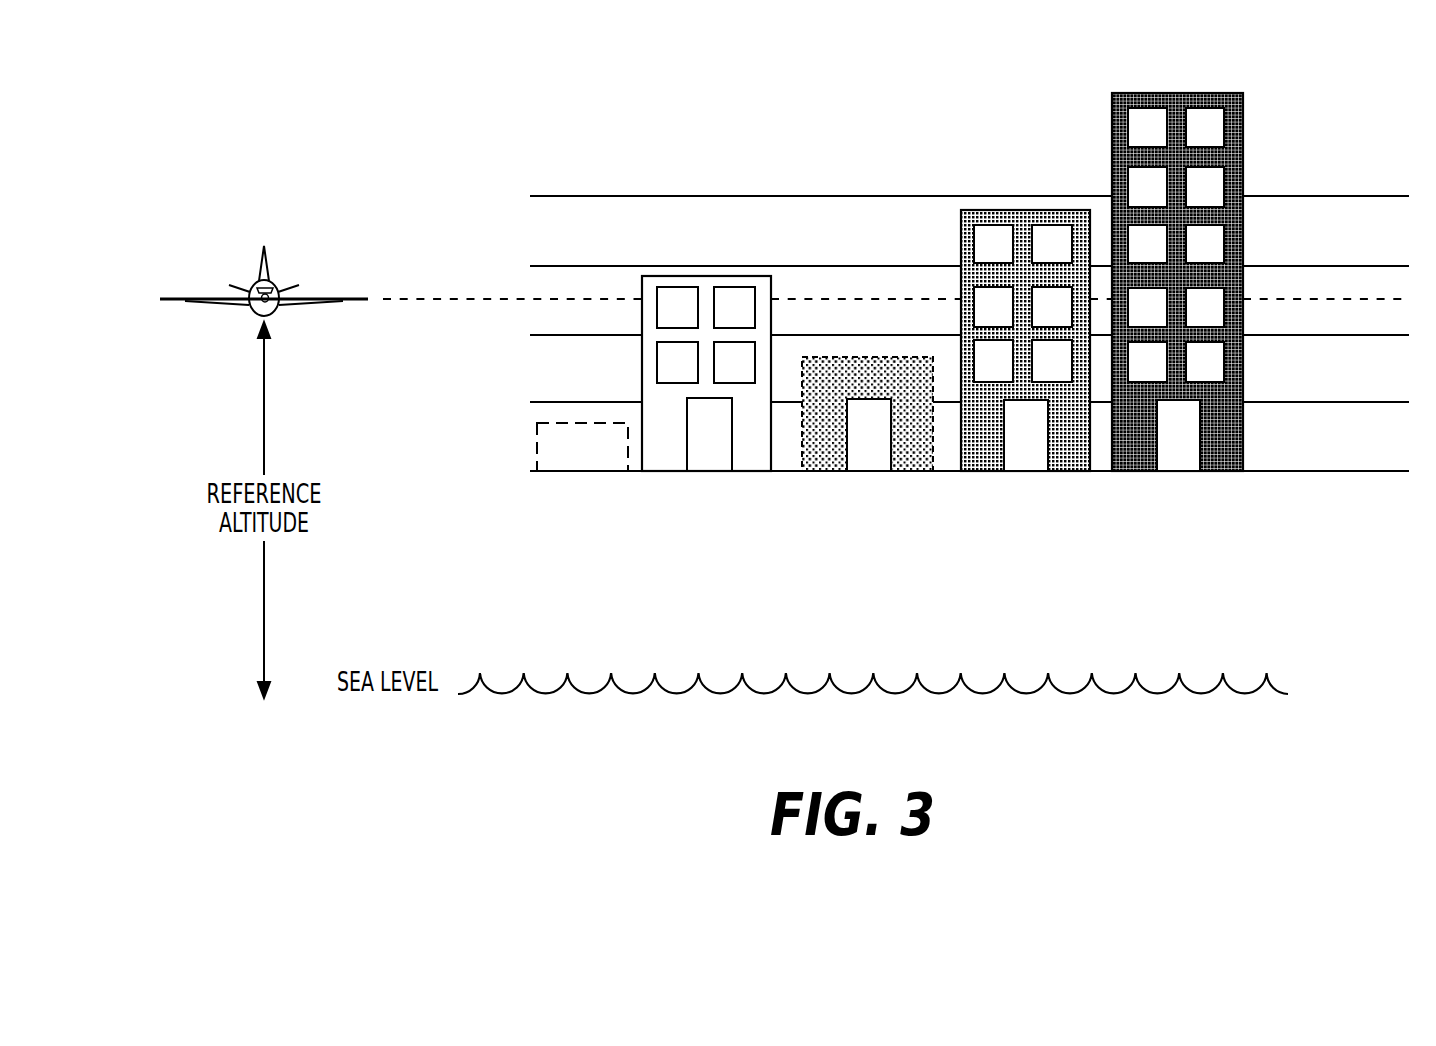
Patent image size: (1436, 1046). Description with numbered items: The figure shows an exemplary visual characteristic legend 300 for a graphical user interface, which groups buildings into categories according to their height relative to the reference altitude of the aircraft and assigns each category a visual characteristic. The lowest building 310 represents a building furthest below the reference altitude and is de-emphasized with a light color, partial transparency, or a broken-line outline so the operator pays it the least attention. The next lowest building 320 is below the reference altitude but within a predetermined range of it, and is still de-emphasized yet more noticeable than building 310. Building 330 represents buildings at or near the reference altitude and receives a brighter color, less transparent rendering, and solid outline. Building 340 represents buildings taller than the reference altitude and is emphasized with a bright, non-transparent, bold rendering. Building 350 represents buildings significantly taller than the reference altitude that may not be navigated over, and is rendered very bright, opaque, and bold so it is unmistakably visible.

The visual characteristic legend 300 is at (855, 86).
The lowest building 310 is at (581, 472).
The next lowest building 320 is at (870, 472).
The building 330 is at (709, 472).
The building 340 is at (1025, 472).
The building 350 is at (1177, 472).